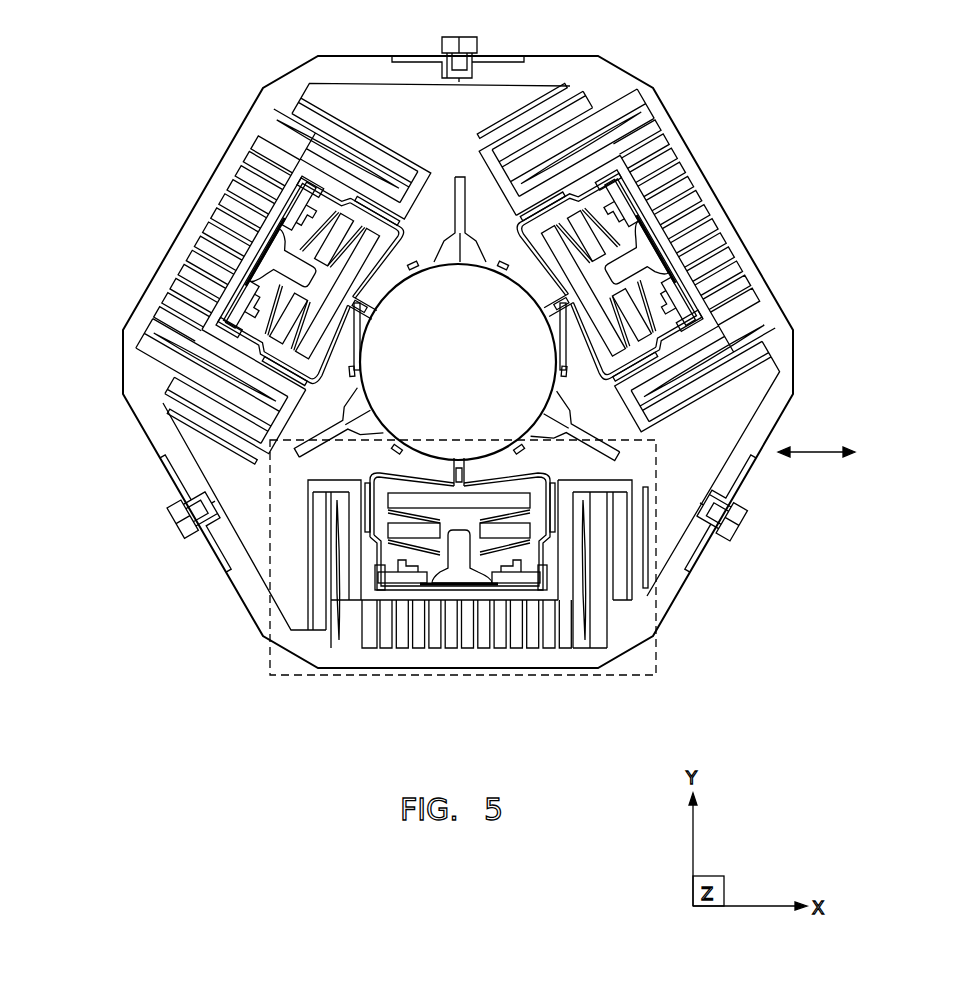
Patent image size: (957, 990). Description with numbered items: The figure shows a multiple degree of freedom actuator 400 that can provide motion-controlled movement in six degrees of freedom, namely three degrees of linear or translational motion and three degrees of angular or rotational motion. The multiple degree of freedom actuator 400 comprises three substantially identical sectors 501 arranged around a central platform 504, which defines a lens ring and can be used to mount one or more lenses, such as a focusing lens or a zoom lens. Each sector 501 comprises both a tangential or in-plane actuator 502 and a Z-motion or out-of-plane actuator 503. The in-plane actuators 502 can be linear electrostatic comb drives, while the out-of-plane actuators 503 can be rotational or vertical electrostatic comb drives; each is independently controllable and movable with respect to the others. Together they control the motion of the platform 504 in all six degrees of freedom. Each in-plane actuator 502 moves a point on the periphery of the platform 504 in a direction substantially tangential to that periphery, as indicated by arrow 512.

The multiple degree of freedom actuator 400 is at (191, 571).
The sector 501 is at (465, 373).
The in-plane actuator 502 is at (183, 252).
The out-of-plane actuator 503 is at (335, 375).
The platform 504 is at (360, 351).
The arrow 512 is at (826, 440).